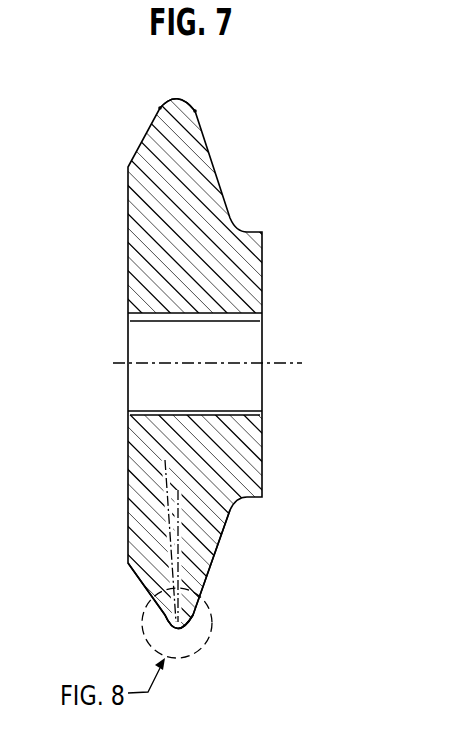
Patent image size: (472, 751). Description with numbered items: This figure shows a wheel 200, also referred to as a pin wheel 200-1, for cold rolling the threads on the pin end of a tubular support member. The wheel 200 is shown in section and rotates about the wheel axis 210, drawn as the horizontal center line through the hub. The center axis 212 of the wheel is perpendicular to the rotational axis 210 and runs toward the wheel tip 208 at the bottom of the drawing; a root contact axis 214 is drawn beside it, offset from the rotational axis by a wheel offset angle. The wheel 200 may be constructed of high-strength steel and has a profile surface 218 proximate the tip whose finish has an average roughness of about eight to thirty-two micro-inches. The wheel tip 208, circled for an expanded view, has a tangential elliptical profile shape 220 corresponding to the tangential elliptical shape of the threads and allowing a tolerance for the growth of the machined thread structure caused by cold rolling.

The wheel 200 is at (112, 200).
The pin wheel 200-1 is at (195, 379).
The profile surface 218 is at (178, 98).
The wheel axis 210 is at (278, 363).
The root contact axis 214 is at (165, 487).
The center axis 212 is at (182, 522).
The tangential elliptical profile shape 220 is at (168, 622).
The wheel tip 208 is at (191, 641).